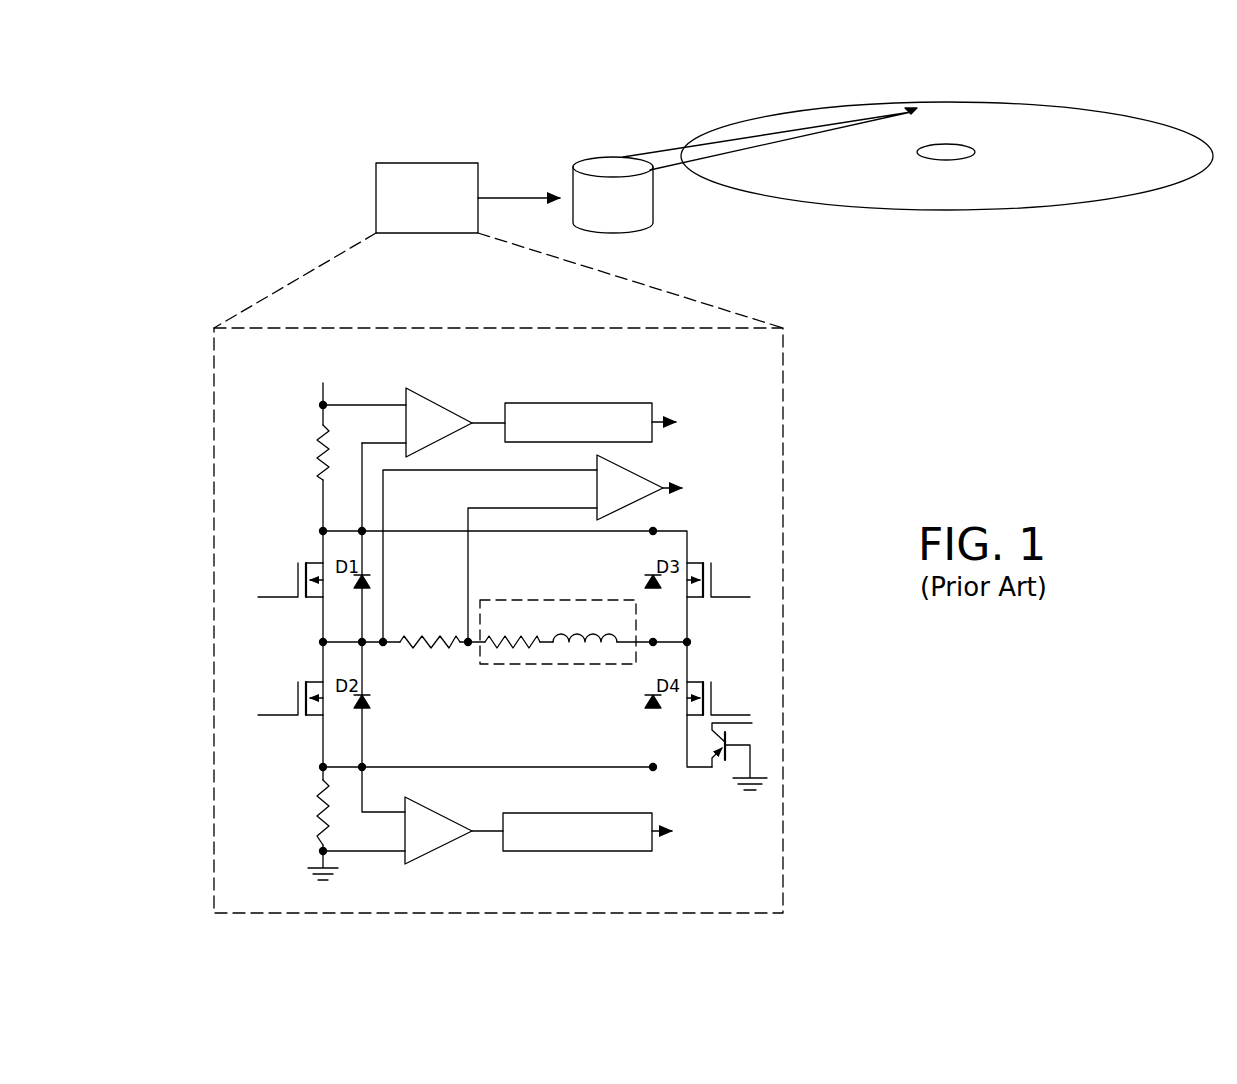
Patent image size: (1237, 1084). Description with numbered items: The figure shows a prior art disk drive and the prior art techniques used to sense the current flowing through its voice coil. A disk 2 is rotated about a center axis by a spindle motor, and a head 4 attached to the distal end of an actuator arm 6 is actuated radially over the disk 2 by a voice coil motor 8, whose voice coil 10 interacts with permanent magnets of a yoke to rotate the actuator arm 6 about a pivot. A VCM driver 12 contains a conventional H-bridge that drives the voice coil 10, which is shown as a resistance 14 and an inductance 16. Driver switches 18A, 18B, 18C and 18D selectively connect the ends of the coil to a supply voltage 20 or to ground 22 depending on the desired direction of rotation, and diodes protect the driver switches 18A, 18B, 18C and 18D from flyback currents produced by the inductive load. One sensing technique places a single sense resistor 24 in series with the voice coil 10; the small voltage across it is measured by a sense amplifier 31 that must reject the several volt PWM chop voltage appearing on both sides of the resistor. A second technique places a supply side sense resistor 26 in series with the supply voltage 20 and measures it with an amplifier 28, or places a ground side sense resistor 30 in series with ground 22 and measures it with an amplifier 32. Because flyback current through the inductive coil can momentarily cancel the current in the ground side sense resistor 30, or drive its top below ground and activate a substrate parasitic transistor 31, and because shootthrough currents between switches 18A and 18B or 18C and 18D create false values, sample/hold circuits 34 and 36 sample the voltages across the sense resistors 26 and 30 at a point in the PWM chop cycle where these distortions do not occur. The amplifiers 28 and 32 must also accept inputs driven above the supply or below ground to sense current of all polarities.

The disk 2 is at (1175, 122).
The head 4 is at (910, 105).
The actuator arm 6 is at (655, 152).
The voice coil motor 8 is at (608, 157).
The voice coil 10 is at (564, 600).
The VCM driver 12 is at (421, 163).
The resistance Rvcm 14 is at (517, 652).
The inductance Lvcm 16 is at (587, 652).
The driver switch 18A is at (280, 576).
The driver switch 18B is at (280, 694).
The driver switch 18C is at (726, 576).
The driver switch 18D is at (726, 694).
The supply voltage 20 is at (320, 405).
The ground 22 is at (320, 852).
The sense resistor Rsense 24 is at (418, 652).
The sense resistor Rsensep 26 is at (312, 443).
The amplifier 28 is at (438, 408).
The sense resistor Rsensem 30 is at (312, 797).
The sense amplifier / parasitic transistor 31 is at (641, 500).
The amplifier 32 is at (437, 818).
The sample/hold circuit 34 is at (580, 403).
The sample/hold circuit 36 is at (578, 851).